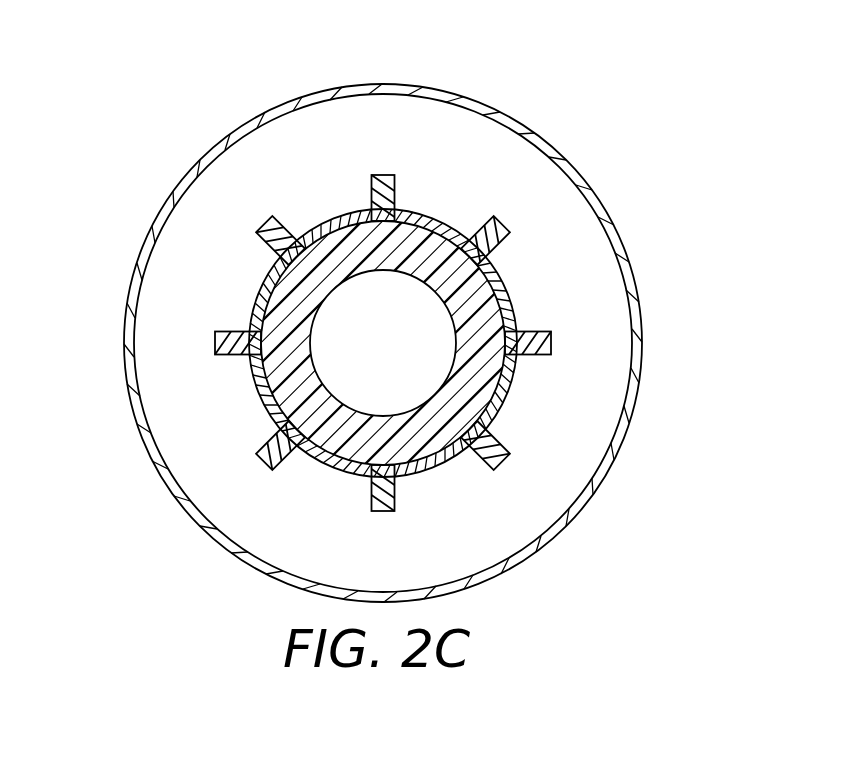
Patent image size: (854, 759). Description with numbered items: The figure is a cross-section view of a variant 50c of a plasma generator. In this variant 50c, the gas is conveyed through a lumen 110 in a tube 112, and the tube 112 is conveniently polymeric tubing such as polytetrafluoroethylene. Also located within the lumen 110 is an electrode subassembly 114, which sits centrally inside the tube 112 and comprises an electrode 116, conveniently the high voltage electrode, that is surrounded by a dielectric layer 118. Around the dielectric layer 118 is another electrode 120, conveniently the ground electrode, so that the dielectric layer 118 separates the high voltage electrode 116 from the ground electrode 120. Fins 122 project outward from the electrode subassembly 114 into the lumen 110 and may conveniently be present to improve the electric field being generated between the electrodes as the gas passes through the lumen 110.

The variant of plasma generator 50c is at (664, 119).
The lumen 110 is at (467, 143).
The tube 112 is at (245, 125).
The electrode subassembly 114 is at (270, 372).
The electrode 116 is at (425, 328).
The dielectric layer 118 is at (478, 370).
The electrode 120 is at (551, 337).
The fins 122 is at (237, 330).